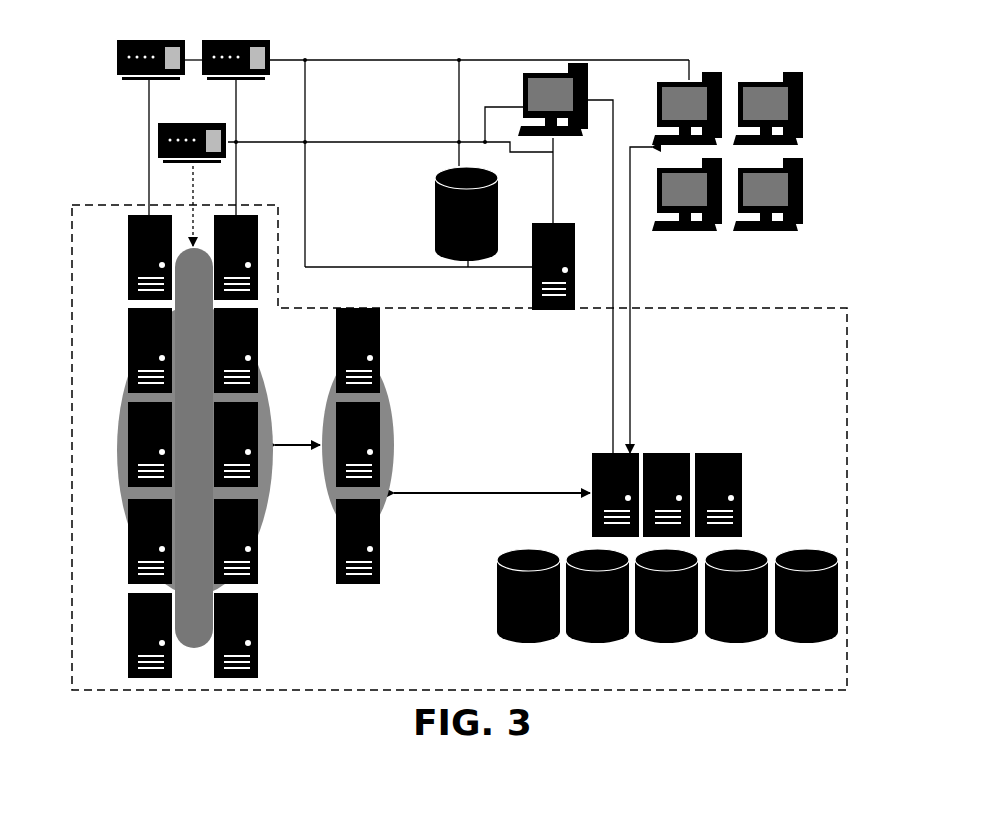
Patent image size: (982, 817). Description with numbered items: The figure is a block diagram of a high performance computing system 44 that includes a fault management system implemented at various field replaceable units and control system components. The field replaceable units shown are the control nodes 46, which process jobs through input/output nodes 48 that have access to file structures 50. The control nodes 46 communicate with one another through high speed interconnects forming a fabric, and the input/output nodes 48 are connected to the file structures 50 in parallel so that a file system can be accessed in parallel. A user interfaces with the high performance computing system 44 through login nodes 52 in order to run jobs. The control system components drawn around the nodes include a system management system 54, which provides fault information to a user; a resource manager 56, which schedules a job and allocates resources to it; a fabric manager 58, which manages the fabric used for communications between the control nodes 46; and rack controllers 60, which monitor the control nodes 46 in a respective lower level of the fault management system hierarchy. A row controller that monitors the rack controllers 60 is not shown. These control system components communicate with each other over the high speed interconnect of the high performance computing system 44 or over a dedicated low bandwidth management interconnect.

The high performance computing system 44 is at (92, 200).
The control nodes 46 is at (106, 388).
The input/output nodes 48 is at (306, 388).
The file structures 50 is at (578, 545).
The login nodes 52 is at (745, 56).
The system management system 54 is at (553, 66).
The resource manager 56 is at (548, 222).
The fabric manager 58 is at (218, 124).
The rack controllers 60 is at (205, 26).